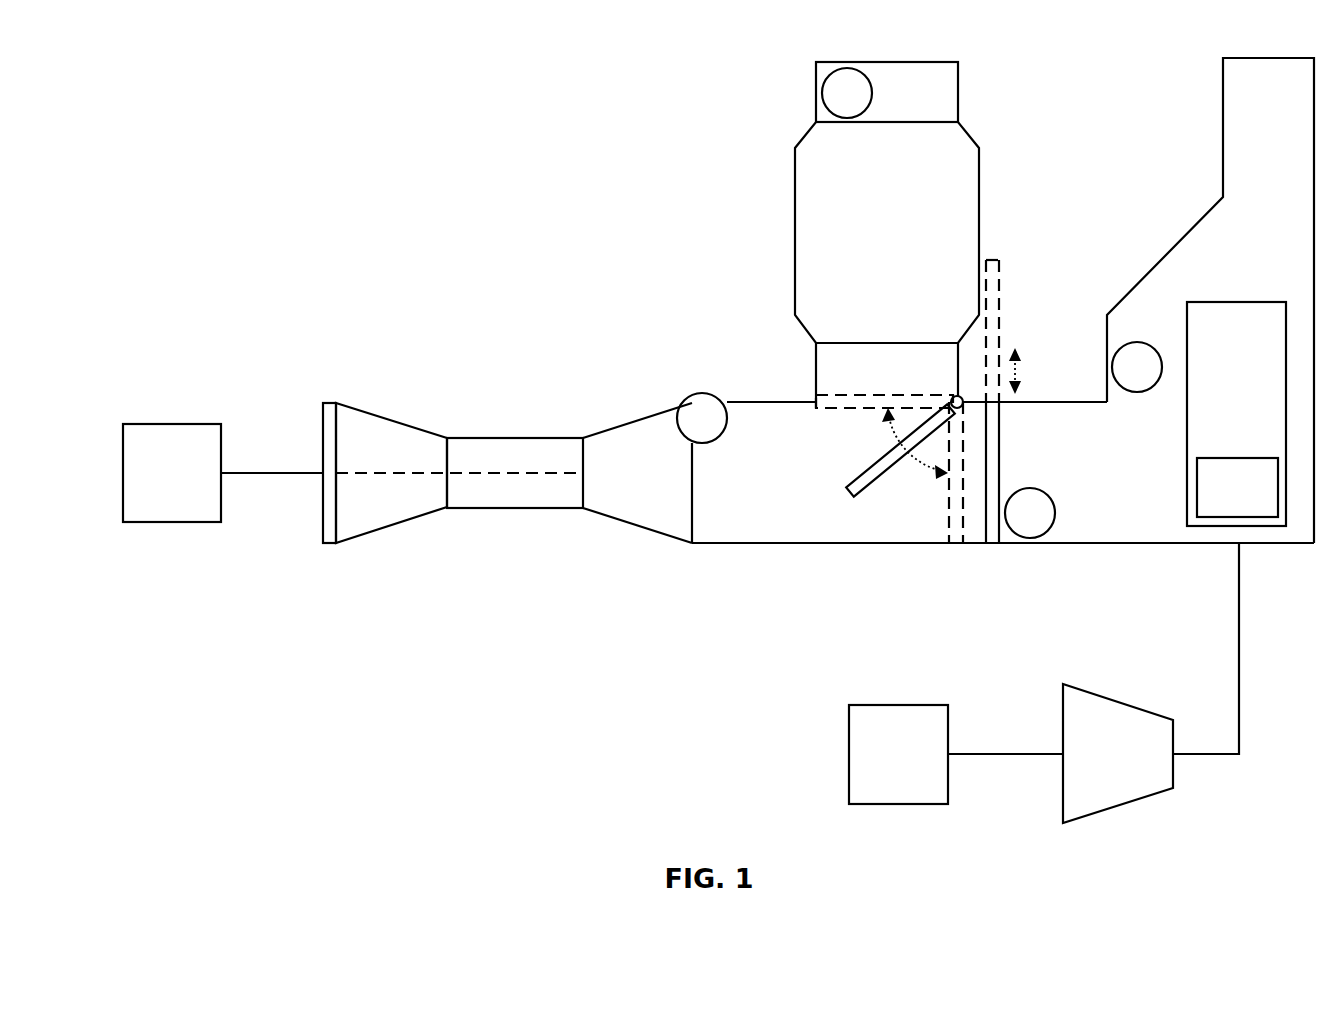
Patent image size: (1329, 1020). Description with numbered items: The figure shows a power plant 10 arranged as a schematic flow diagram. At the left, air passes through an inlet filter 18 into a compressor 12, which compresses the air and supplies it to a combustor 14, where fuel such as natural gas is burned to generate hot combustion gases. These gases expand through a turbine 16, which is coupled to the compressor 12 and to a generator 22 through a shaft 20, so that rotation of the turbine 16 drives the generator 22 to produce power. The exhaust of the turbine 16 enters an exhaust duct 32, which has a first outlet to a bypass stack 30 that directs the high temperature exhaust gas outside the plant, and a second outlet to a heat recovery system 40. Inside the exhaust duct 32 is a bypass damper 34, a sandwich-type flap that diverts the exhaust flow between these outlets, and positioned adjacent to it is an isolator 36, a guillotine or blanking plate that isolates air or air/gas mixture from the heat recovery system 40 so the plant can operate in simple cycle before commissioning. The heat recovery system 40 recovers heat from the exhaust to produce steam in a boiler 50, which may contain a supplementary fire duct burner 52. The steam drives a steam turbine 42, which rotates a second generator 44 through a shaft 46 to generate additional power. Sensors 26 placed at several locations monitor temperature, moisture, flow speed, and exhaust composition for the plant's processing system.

The power plant 10 is at (292, 131).
The compressor 12 is at (368, 533).
The combustor 14 is at (530, 437).
The turbine 16 is at (655, 537).
The inlet filter 18 is at (330, 402).
The shaft 20 is at (235, 473).
The generator 22 is at (168, 423).
The sensor 26 is at (919, 303).
The bypass stack 30 is at (808, 133).
The exhaust duct 32 is at (740, 398).
The bypass damper 34 is at (870, 463).
The isolator 36 is at (1000, 470).
The heat recovery system 40 is at (1160, 260).
The steam turbine 42 is at (1088, 685).
The generator 44 is at (897, 705).
The shaft 46 is at (1032, 757).
The boiler 50 is at (1236, 414).
The supplementary fire duct burner 52 is at (1237, 487).